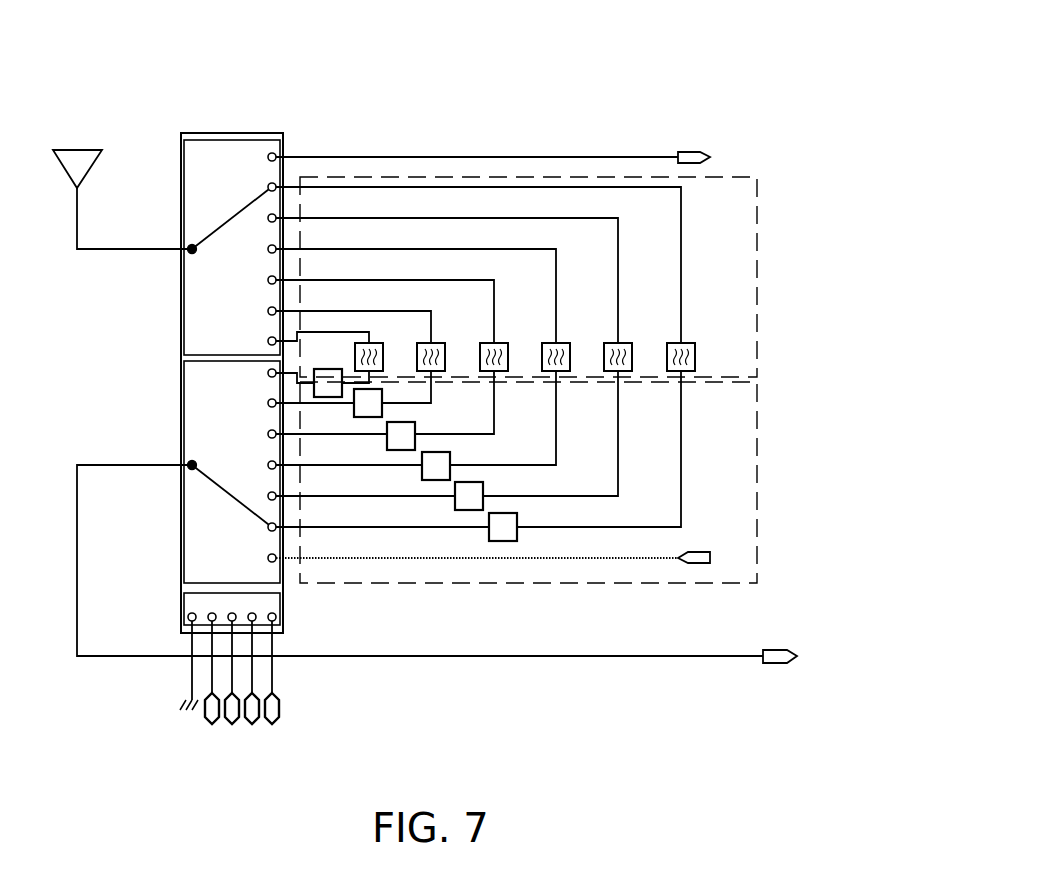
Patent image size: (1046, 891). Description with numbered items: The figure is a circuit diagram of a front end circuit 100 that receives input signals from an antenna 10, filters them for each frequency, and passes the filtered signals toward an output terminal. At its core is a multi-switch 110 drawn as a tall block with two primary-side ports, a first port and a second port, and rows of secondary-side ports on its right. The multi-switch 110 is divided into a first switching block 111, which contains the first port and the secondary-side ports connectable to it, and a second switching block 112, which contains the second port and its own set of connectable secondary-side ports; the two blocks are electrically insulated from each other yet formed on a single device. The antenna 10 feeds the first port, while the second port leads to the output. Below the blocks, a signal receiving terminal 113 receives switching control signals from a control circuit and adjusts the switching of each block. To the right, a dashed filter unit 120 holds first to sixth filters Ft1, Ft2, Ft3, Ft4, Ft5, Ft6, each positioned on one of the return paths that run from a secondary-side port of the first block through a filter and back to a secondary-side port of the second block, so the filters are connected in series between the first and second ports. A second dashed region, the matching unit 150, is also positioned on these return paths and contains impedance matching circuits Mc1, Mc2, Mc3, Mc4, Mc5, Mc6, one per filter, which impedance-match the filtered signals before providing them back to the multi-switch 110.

The front end circuit 100 is at (455, 40).
The antenna 10 is at (83, 150).
The multi-switch 110 is at (257, 133).
The first switching block 111 is at (187, 285).
The second switching block 112 is at (187, 397).
The signal receiving terminal 113 is at (187, 605).
The filter unit 120 is at (759, 263).
The matching unit 150 is at (759, 470).
The first filter Ft1 is at (380, 345).
The second filter Ft2 is at (442, 345).
The third filter Ft3 is at (505, 345).
The fourth filter Ft4 is at (567, 345).
The fifth filter Ft5 is at (629, 345).
The sixth filter Ft6 is at (691, 345).
The impedance matching circuit Mc1 is at (322, 372).
The impedance matching circuit Mc2 is at (390, 399).
The impedance matching circuit Mc3 is at (423, 431).
The impedance matching circuit Mc4 is at (458, 462).
The impedance matching circuit Mc5 is at (491, 492).
The impedance matching circuit Mc6 is at (524, 522).